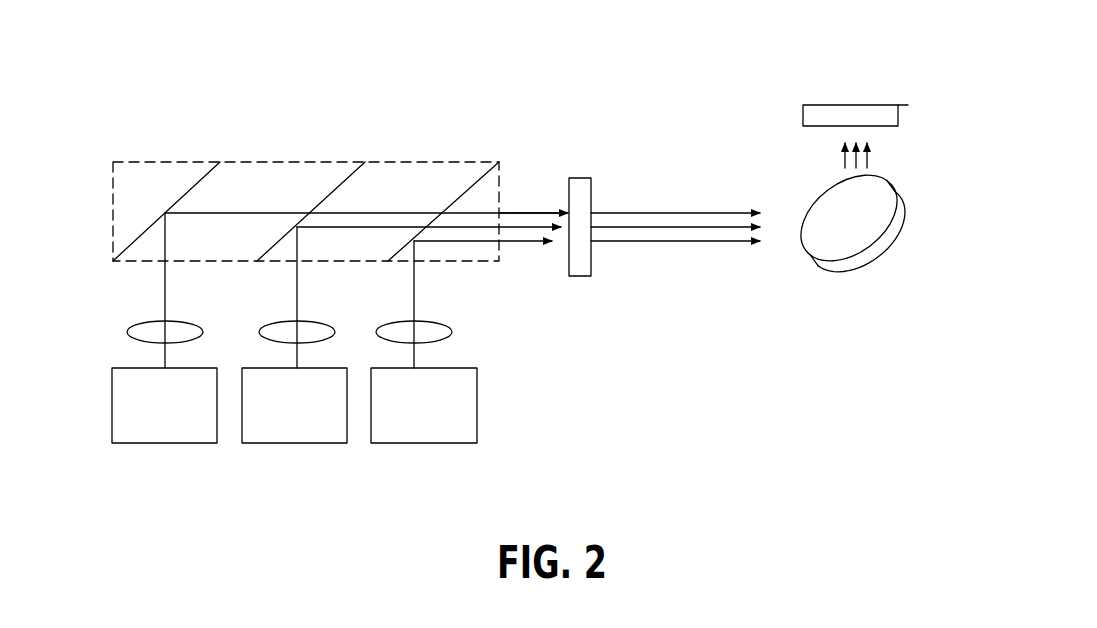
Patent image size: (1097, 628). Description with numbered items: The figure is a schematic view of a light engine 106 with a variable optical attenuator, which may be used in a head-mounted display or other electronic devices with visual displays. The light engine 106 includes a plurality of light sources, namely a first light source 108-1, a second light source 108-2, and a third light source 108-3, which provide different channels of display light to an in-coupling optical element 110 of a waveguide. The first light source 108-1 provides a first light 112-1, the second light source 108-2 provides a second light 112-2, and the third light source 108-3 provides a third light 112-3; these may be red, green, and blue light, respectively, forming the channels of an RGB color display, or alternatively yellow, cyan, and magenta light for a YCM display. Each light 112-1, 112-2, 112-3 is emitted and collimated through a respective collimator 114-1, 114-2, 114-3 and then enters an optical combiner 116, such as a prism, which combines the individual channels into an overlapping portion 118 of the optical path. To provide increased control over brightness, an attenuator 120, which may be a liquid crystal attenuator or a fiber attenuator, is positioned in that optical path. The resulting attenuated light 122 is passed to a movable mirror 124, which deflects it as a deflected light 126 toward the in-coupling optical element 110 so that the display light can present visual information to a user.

The light engine 106 is at (596, 117).
The first light source 108-1 is at (164, 405).
The second light source 108-2 is at (294, 405).
The third light source 108-3 is at (424, 405).
The in-coupling optical element 110 is at (882, 103).
The first light 112-1 is at (163, 288).
The second light 112-2 is at (297, 288).
The third light 112-3 is at (414, 288).
The collimator 114-1 is at (125, 332).
The collimator 114-2 is at (276, 323).
The collimator 114-3 is at (448, 333).
The optical combiner 116 is at (397, 162).
The overlapping portion 118 is at (537, 202).
The attenuator 120 is at (580, 177).
The attenuated light 122 is at (730, 244).
The movable mirror 124 is at (877, 247).
The deflected light 126 is at (868, 155).